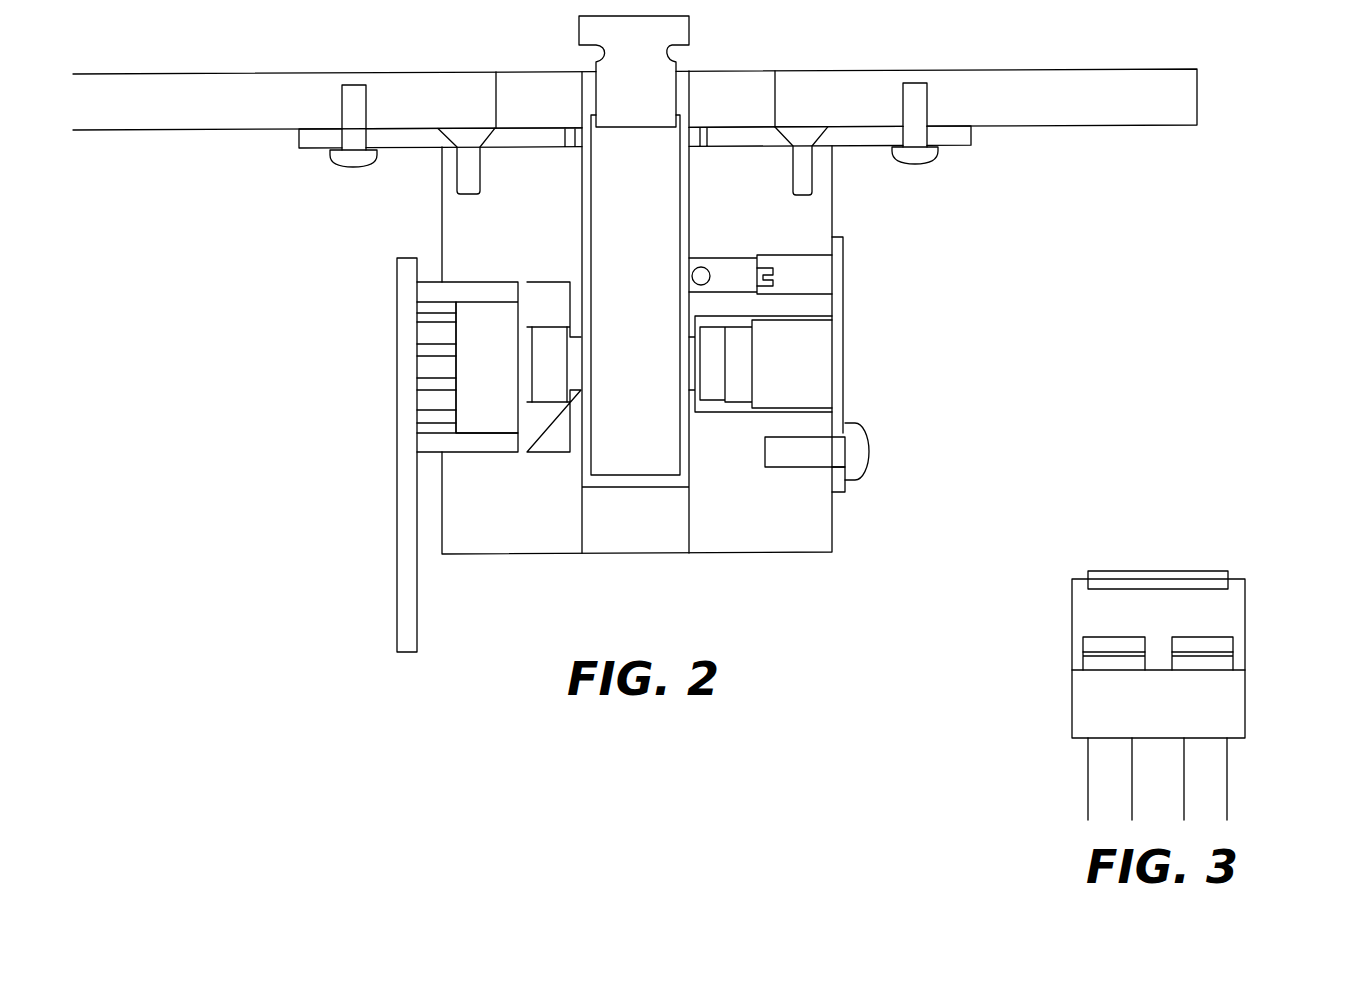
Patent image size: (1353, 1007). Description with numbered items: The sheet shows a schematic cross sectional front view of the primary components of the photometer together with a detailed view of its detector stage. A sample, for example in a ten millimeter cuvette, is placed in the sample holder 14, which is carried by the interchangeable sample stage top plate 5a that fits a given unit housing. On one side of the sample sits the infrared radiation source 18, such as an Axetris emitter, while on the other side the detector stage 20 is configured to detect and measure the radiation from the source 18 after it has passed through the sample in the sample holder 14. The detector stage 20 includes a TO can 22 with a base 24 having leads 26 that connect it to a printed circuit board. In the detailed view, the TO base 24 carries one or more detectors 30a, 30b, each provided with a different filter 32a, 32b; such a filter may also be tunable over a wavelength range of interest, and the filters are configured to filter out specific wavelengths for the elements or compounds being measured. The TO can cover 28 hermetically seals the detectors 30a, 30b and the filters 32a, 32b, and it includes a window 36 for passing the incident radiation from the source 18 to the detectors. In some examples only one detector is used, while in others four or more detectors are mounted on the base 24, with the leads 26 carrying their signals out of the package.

In FIG. 2, the sample stage top plate 5a is at (1049, 113).
In FIG. 2, the sample holder 14 is at (615, 179).
In FIG. 2, the infrared radiation source 18 is at (800, 358).
In FIG. 2, the detector stage 20 is at (472, 281).
In FIG. 2, the TO can 22 is at (547, 312).
In FIG. 2, the TO base 24 is at (498, 391).
In FIG. 3, the TO base 24 is at (1113, 705).
In FIG. 2, the leads 26 is at (425, 352).
In FIG. 3, the leads 26 is at (1088, 778).
In FIG. 2, the TO can cover 28 is at (549, 380).
In FIG. 3, the TO can cover 28 is at (1245, 595).
In FIG. 3, the detector 30a is at (1095, 660).
In FIG. 3, the detector 30b is at (1220, 659).
In FIG. 3, the filter 32a is at (1110, 643).
In FIG. 3, the filter 32b is at (1205, 642).
In FIG. 3, the window 36 is at (1157, 577).